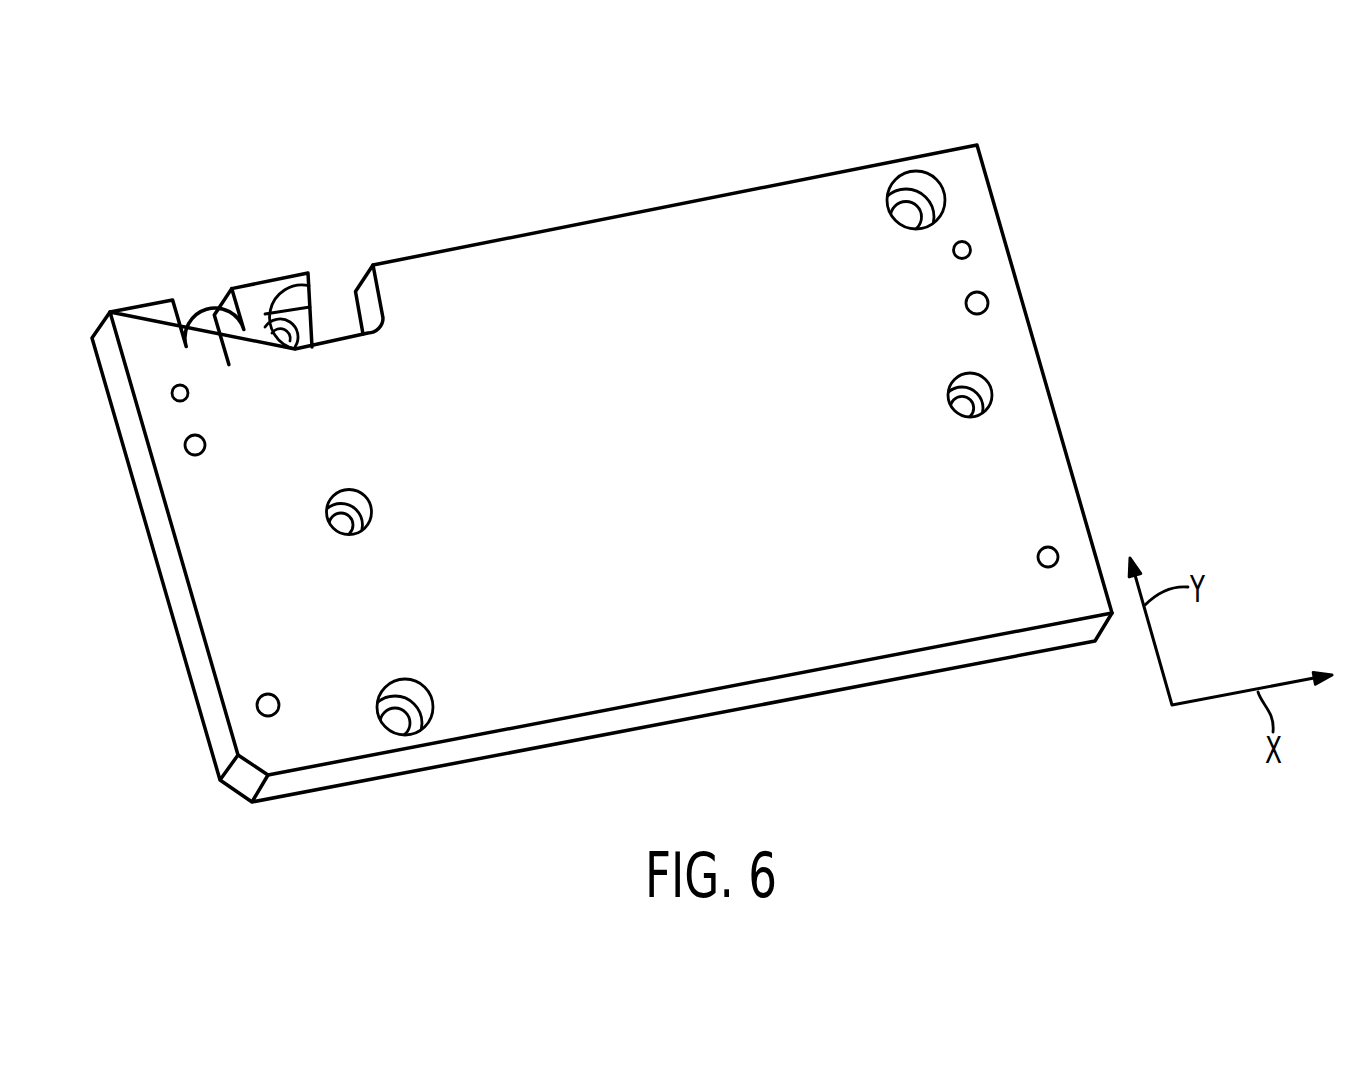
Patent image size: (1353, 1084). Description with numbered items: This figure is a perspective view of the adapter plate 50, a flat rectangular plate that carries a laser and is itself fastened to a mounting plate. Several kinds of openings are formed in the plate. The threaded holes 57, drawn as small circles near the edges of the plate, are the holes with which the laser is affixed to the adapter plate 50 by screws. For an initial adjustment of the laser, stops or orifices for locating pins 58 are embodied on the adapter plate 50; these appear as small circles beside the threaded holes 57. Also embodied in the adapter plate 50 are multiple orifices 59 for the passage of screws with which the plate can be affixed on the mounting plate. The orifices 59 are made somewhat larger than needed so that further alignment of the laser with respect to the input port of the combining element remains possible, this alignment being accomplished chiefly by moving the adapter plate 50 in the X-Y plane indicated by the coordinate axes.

The adapter plate 50 is at (953, 660).
The threaded holes 57 is at (187, 447).
The orifices for locating pins 58 is at (172, 397).
The orifices 59 is at (915, 182).